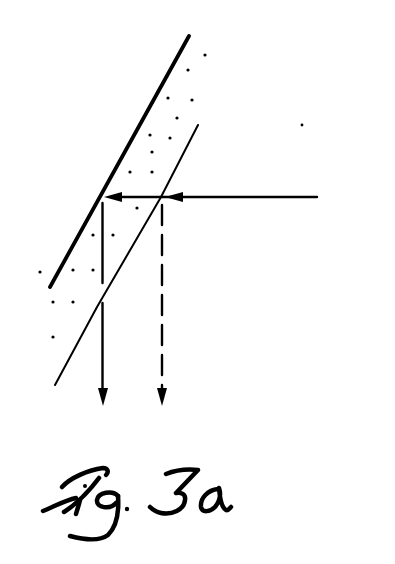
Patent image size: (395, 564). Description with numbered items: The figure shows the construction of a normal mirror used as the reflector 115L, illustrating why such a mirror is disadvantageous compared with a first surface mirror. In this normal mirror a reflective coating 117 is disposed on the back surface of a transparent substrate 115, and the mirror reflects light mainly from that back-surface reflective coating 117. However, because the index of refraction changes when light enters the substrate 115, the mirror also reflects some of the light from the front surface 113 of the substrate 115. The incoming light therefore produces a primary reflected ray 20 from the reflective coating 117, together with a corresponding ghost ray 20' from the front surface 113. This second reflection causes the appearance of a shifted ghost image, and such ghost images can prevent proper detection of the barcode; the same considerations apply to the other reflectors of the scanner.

The reflective coating 117 is at (188, 37).
The transparent substrate 115 is at (187, 89).
The reflector 115L is at (127, 117).
The front surface 113 is at (196, 134).
The primary reflected ray 20 is at (196, 299).
The ghost ray 20' is at (195, 323).